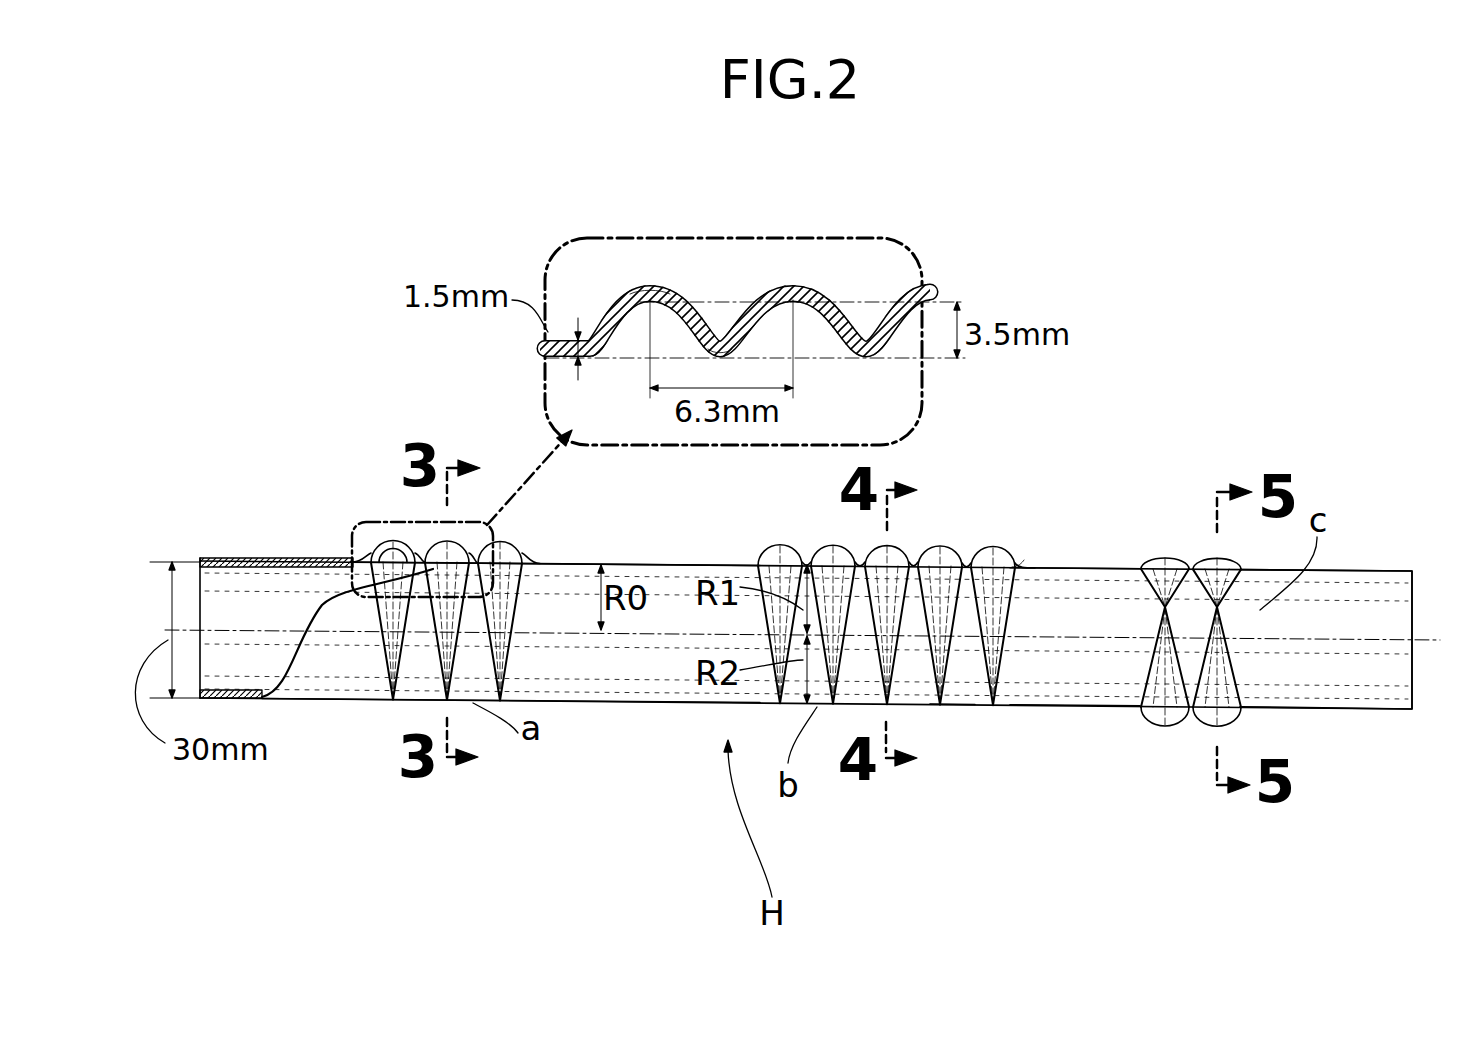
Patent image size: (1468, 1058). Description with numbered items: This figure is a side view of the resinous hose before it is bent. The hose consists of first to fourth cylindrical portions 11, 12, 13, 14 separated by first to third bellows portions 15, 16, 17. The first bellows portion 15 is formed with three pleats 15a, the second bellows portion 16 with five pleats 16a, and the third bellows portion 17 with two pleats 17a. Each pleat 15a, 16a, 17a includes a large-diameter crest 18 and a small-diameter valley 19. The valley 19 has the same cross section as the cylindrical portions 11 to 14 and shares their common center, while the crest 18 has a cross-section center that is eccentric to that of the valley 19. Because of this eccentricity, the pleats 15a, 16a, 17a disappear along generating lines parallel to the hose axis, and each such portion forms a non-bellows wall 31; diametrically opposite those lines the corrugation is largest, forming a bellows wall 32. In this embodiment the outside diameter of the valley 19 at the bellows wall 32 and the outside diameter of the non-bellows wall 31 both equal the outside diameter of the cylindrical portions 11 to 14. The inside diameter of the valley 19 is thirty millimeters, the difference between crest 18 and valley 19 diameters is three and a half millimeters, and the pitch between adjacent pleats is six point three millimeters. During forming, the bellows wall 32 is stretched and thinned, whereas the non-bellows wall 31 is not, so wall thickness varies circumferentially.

The first cylindrical portion 11 is at (323, 688).
The second cylindrical portion 12 is at (640, 700).
The third cylindrical portion 13 is at (1083, 693).
The fourth cylindrical portion 14 is at (1332, 700).
The first bellows portion 15 is at (472, 534).
The pleat of first bellows portion 15a is at (393, 540).
The second bellows portion 16 is at (920, 530).
The pleat of second bellows portion 16a is at (883, 547).
The third bellows portion 17 is at (1165, 535).
The pleat of third bellows portion 17a is at (1213, 714).
The large-diameter crest 18 is at (652, 287).
The small-diameter valley 19 is at (727, 338).
The non-bellows wall 31 is at (953, 722).
The bellows wall 32 is at (1032, 548).